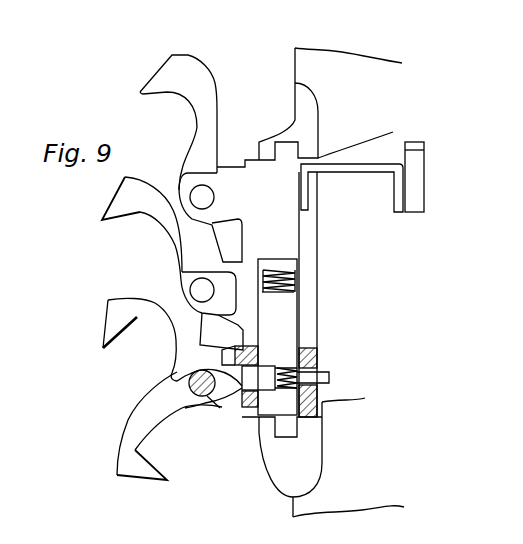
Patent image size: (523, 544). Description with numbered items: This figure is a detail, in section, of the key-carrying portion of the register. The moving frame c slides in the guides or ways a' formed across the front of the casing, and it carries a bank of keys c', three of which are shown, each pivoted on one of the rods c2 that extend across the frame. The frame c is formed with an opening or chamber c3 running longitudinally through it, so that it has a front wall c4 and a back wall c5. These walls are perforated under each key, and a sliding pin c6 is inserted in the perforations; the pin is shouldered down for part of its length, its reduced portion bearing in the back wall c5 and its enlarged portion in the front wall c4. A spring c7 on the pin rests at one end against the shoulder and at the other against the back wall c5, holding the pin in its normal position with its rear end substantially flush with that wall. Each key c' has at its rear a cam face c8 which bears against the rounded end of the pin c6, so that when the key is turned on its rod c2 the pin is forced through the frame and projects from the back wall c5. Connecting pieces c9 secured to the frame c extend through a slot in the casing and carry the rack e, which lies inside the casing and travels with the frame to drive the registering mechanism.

The guides or ways a' is at (310, 282).
The moving frame c is at (208, 203).
The keys c' is at (169, 328).
The rods c2 is at (208, 198).
The opening or chamber c3 is at (229, 223).
The front wall c4 is at (248, 331).
The back wall c5 is at (318, 318).
The sliding pin c6 is at (330, 376).
The spring c7 is at (262, 288).
The cam face c8 is at (203, 422).
The connecting pieces c9 is at (358, 168).
The rack e is at (413, 196).